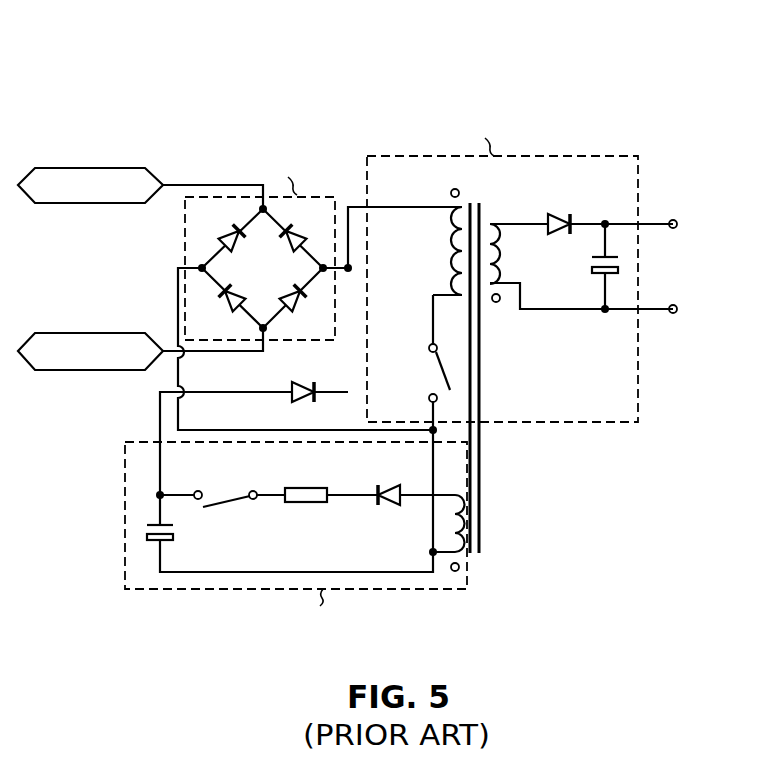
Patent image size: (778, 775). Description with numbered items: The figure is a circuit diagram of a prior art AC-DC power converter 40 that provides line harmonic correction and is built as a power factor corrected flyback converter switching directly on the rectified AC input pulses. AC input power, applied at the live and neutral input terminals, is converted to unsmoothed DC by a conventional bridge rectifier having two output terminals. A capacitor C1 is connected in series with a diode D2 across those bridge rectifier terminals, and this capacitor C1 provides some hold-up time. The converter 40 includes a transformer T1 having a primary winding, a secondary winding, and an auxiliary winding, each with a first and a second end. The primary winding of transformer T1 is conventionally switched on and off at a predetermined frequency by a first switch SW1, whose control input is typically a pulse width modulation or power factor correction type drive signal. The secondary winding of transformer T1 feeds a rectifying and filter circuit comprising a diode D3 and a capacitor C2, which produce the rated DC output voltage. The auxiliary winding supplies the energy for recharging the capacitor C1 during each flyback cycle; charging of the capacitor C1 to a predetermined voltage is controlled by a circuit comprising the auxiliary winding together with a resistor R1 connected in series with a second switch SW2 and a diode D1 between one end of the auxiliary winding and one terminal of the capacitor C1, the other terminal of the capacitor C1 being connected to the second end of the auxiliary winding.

The AC-DC power converter 40 is at (660, 70).
The transformer T1 is at (466, 366).
The diode D1 is at (380, 480).
The diode D2 is at (321, 402).
The diode D3 is at (561, 206).
The capacitor C1 is at (179, 535).
The capacitor C2 is at (589, 279).
The resistor R1 is at (306, 479).
The first switch SW1 is at (418, 373).
The second switch SW2 is at (225, 481).